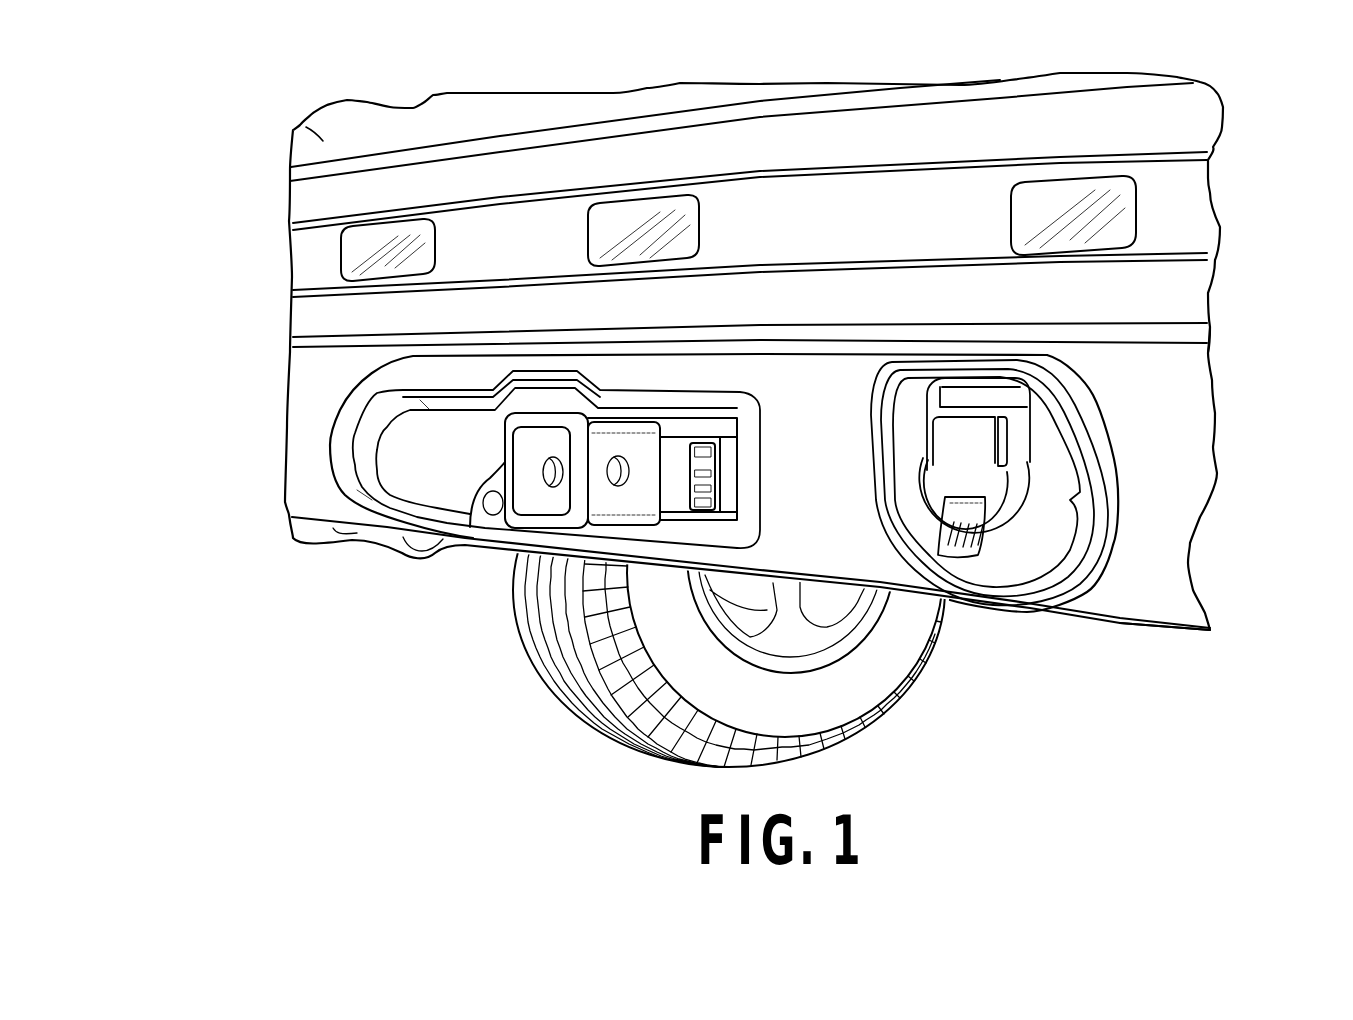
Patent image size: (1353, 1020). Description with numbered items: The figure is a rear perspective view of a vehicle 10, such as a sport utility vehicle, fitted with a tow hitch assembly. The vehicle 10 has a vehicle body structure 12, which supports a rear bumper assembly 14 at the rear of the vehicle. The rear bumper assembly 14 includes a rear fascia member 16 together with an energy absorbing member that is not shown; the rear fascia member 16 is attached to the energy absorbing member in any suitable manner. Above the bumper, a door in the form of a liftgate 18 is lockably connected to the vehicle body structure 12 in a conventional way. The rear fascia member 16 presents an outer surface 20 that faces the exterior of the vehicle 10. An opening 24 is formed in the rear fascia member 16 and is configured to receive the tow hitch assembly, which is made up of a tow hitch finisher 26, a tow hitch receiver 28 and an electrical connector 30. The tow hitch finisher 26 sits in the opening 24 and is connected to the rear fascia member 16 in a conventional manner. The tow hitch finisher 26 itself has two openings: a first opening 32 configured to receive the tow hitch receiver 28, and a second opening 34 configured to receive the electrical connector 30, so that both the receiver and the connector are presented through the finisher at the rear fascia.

The vehicle 10 is at (262, 509).
The vehicle body structure 12 is at (282, 174).
The rear bumper assembly 14 is at (283, 378).
The rear fascia member 16 is at (1220, 379).
The liftgate 18 is at (300, 125).
The outer surface 20 is at (1158, 486).
The opening 24 is at (1117, 530).
The tow hitch finisher 26 is at (319, 450).
The tow hitch receiver 28 is at (497, 462).
The electrical connector 30 is at (975, 479).
The first opening 32 is at (758, 455).
The second opening 34 is at (1033, 513).